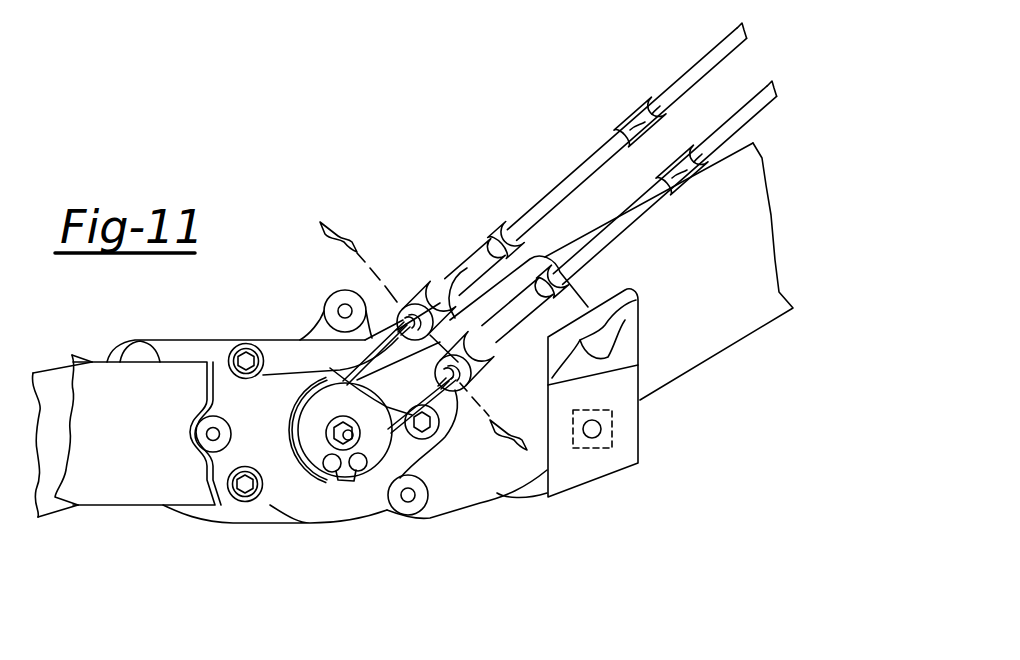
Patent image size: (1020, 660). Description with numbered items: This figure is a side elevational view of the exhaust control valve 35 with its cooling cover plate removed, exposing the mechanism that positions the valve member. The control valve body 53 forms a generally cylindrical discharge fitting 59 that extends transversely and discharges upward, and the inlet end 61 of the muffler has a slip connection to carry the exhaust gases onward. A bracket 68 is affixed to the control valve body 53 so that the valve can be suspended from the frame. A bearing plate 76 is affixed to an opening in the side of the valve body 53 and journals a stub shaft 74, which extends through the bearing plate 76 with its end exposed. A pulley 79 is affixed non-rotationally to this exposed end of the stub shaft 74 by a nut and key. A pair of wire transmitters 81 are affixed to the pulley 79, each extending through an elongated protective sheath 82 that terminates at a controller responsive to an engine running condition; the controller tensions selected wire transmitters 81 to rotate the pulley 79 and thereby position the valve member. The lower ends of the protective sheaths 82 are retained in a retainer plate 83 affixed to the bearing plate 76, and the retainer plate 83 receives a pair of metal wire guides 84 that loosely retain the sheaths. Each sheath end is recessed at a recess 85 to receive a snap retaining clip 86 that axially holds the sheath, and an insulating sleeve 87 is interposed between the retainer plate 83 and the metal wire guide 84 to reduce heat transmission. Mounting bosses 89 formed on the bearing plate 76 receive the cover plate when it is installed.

The control valve 35 is at (403, 243).
The control valve body 53 is at (196, 337).
The discharge fitting 59 is at (505, 500).
The inlet end 61 is at (725, 355).
The bracket 68 is at (642, 445).
The stub shaft 74 is at (328, 432).
The bearing plate 76 is at (280, 512).
The pulley 79 is at (327, 474).
The wire transmitters 81 is at (338, 357).
The protective sheaths 82 is at (598, 145).
The retainer plate 83 is at (425, 296).
The metal wire guides 84 is at (500, 233).
The recess 85 is at (402, 318).
The snap retaining clips 86 is at (320, 224).
The insulating sleeve 87 is at (462, 284).
The mounting bosses 89 is at (203, 445).